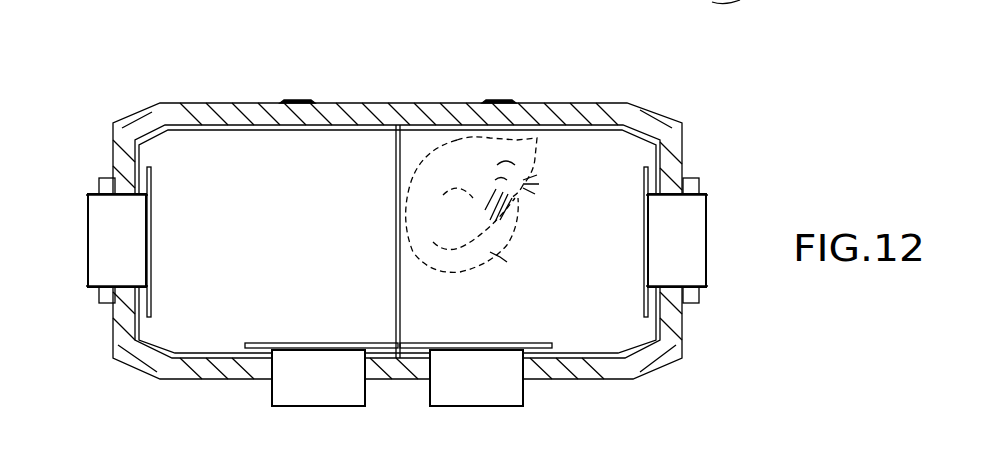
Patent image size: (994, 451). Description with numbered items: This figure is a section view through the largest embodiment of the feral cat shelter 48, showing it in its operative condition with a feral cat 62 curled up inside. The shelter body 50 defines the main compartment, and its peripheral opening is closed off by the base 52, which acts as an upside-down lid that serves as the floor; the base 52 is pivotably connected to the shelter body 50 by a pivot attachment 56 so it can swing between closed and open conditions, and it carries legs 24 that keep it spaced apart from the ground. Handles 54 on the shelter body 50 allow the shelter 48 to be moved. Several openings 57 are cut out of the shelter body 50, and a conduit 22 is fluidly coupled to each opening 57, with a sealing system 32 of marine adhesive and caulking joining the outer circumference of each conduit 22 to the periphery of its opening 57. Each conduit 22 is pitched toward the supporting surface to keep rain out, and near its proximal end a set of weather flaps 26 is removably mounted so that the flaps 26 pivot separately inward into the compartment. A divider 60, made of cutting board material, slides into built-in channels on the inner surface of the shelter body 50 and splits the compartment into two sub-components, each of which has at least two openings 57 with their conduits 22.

The feral cat shelter 48 is at (228, 46).
The shelter body 50 is at (397, 103).
The pivot attachment 56 is at (298, 103).
The opening 57 is at (136, 178).
The weather flaps 26 is at (151, 195).
The conduit 22 is at (88, 236).
The handles 54 is at (101, 179).
The sealing system 32 is at (113, 303).
The divider 60 is at (396, 290).
The feral cats 62 is at (520, 264).
The base 52 is at (291, 238).
The legs 24 is at (723, 5).